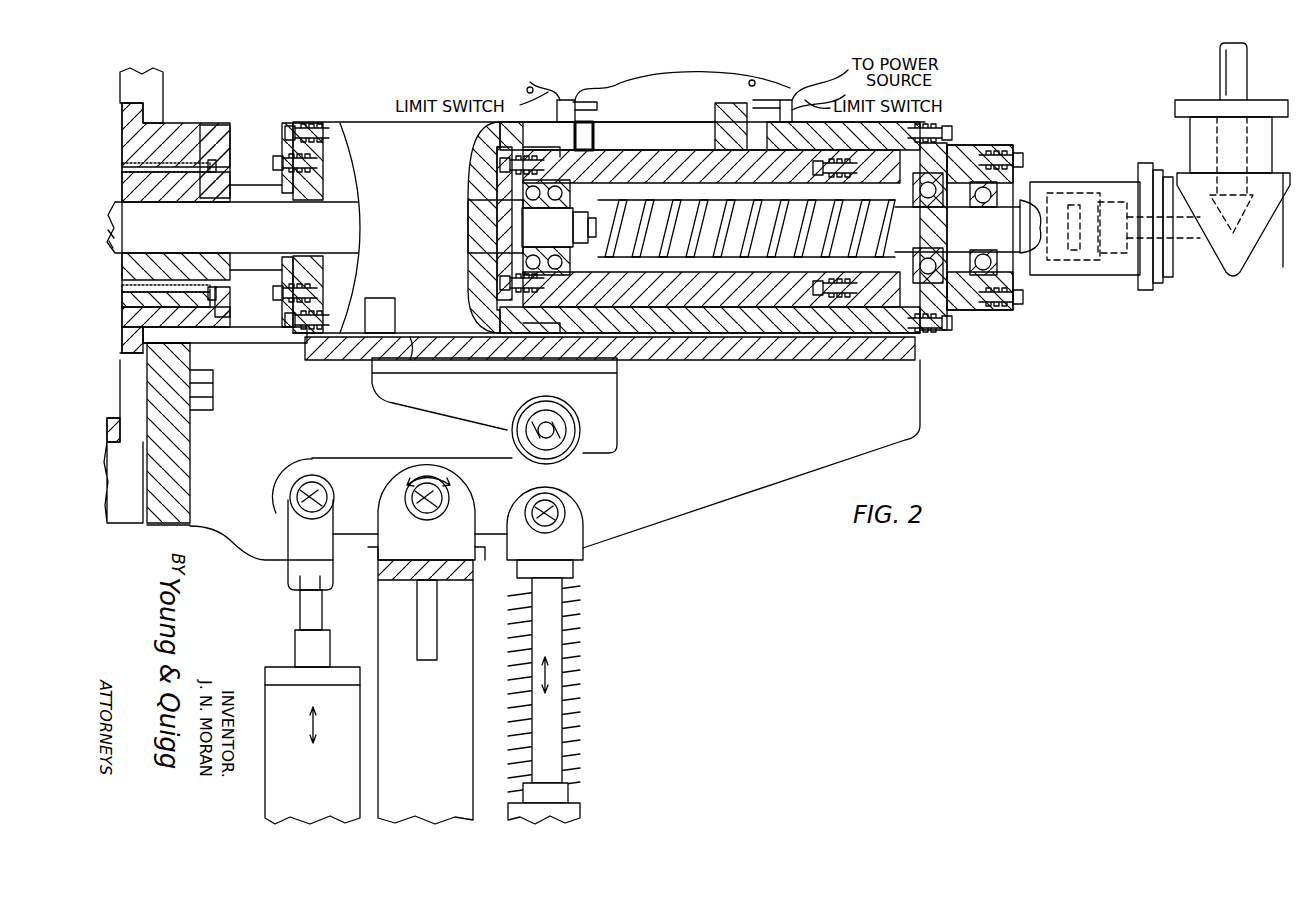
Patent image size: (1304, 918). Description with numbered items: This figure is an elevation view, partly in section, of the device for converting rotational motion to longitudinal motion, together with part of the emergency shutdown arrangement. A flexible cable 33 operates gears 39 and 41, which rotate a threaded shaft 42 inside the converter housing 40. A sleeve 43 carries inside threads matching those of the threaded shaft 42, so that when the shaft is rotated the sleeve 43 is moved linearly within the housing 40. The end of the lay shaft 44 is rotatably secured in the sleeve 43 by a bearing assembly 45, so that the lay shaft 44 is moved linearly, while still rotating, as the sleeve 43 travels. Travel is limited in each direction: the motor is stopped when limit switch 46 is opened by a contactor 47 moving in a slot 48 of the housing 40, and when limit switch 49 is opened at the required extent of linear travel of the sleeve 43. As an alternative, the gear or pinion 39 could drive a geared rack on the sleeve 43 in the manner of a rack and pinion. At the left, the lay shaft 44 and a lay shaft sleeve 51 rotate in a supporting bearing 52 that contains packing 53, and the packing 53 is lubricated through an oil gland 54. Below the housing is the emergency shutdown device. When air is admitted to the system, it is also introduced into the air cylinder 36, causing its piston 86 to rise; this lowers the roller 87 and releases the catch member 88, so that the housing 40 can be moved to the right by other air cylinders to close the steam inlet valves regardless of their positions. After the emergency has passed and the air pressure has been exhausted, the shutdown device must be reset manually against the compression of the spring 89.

The flexible cable 33 is at (1238, 62).
The air cylinder 36 is at (326, 772).
The gear 39 is at (1232, 188).
The converter housing 40 is at (433, 236).
The gear 41 is at (1176, 255).
The threaded shaft 42 is at (720, 257).
The sleeve 43 is at (742, 280).
The lay shaft 44 is at (290, 237).
The bearing assembly 45 is at (598, 267).
The limit switch 46 is at (788, 112).
The contactor 47 is at (716, 108).
The slot 48 is at (662, 122).
The limit switch 49 is at (583, 122).
The lay shaft sleeve 51 is at (222, 185).
The supporting bearing 52 is at (167, 130).
The packing 53 is at (200, 143).
The oil gland 54 is at (212, 165).
The piston 86 is at (325, 612).
The roller 87 is at (520, 435).
The catch member 88 is at (600, 417).
The spring 89 is at (575, 596).